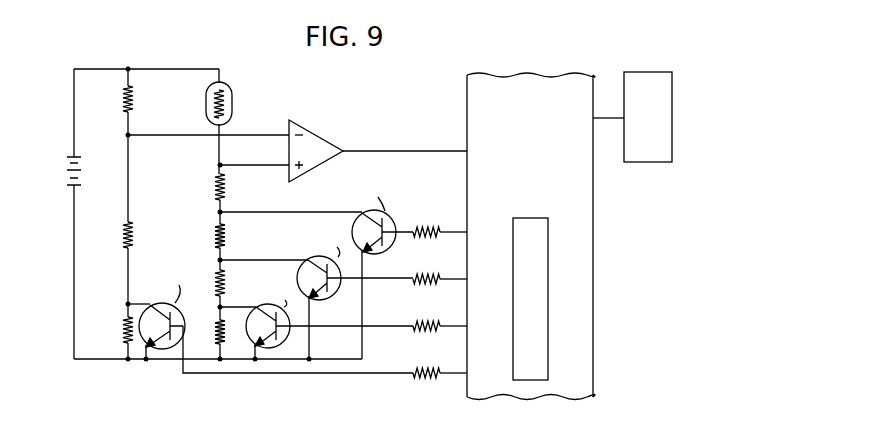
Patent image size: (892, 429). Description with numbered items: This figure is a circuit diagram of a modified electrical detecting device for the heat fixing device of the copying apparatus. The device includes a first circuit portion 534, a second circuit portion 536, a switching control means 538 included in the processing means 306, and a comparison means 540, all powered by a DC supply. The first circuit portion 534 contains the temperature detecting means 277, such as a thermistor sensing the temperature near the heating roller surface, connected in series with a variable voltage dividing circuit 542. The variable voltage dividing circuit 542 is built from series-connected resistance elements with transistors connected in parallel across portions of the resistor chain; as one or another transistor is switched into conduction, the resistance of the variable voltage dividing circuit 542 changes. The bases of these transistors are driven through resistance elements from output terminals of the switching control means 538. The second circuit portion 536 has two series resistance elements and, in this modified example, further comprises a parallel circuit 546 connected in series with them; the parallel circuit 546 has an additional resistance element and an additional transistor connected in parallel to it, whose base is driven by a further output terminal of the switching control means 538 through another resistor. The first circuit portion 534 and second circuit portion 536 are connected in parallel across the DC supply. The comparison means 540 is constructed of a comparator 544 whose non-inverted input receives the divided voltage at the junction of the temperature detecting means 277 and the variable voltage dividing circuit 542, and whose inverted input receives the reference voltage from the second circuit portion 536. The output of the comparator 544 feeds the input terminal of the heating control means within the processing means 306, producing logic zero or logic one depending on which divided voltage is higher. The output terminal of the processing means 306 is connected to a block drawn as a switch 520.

The temperature detecting means 277 is at (232, 90).
The first circuit portion 534 is at (257, 109).
The comparator 544 is at (290, 119).
The comparison means 540 is at (340, 133).
The variable voltage dividing circuit 542 is at (303, 203).
The second circuit portion 536 is at (101, 249).
The parallel circuit 546 is at (90, 343).
The processing means 306 is at (593, 232).
The switching control means 538 is at (548, 298).
The switch 520 is at (656, 163).